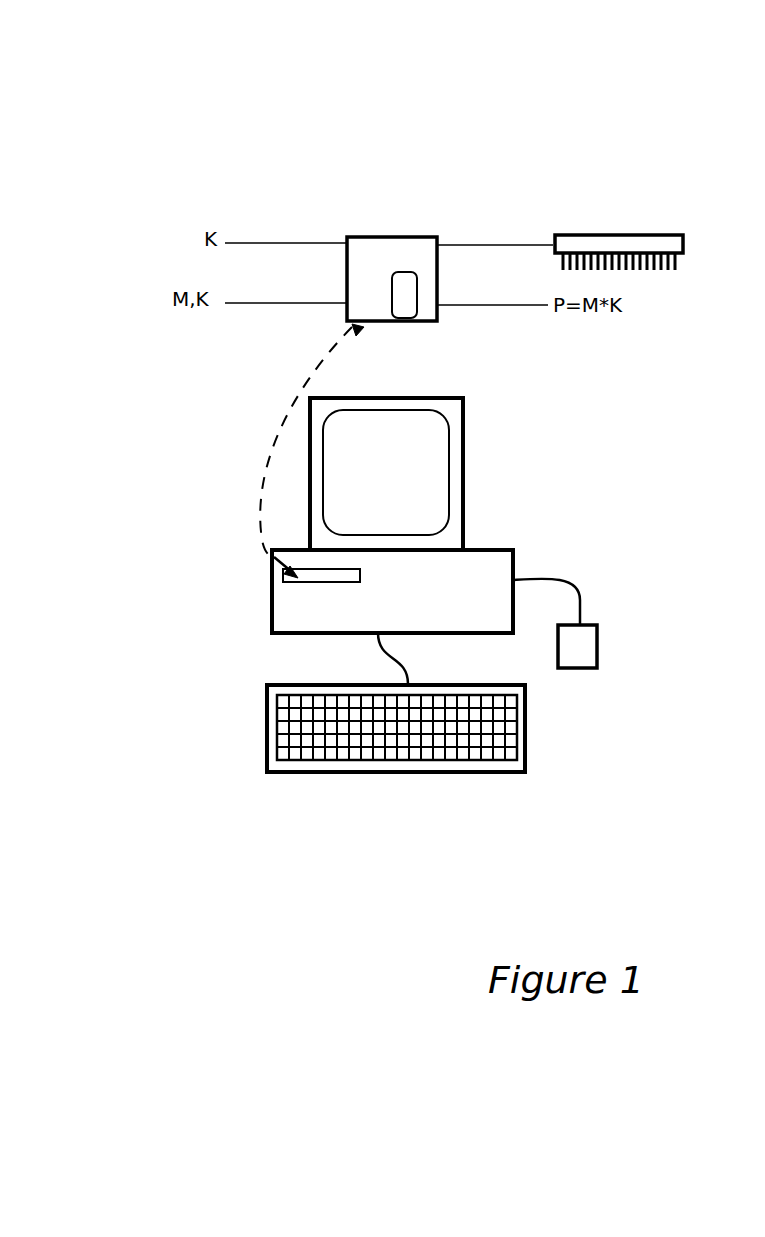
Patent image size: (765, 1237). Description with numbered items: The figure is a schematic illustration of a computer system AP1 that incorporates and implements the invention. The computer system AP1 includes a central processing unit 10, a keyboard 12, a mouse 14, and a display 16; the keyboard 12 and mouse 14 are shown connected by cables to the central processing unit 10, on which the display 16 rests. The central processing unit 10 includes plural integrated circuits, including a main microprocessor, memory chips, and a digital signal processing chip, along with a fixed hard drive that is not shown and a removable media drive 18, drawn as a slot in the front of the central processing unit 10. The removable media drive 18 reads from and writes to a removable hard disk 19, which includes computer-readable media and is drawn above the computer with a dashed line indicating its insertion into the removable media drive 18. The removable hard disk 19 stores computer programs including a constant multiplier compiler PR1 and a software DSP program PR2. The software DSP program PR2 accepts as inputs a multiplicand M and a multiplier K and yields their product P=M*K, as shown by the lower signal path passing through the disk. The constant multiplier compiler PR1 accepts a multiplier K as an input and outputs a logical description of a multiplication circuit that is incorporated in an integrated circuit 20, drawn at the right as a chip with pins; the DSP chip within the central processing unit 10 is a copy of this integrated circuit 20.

The computer system AP1 is at (240, 138).
The constant multiplier compiler PR1 is at (172, 240).
The software DSP program PR2 is at (146, 302).
The removable hard disk 19 is at (413, 237).
The integrated circuit 20 is at (616, 235).
The display 16 is at (398, 493).
The central processing unit 10 is at (448, 607).
The removable media drive 18 is at (338, 582).
The mouse 14 is at (578, 668).
The keyboard 12 is at (330, 772).